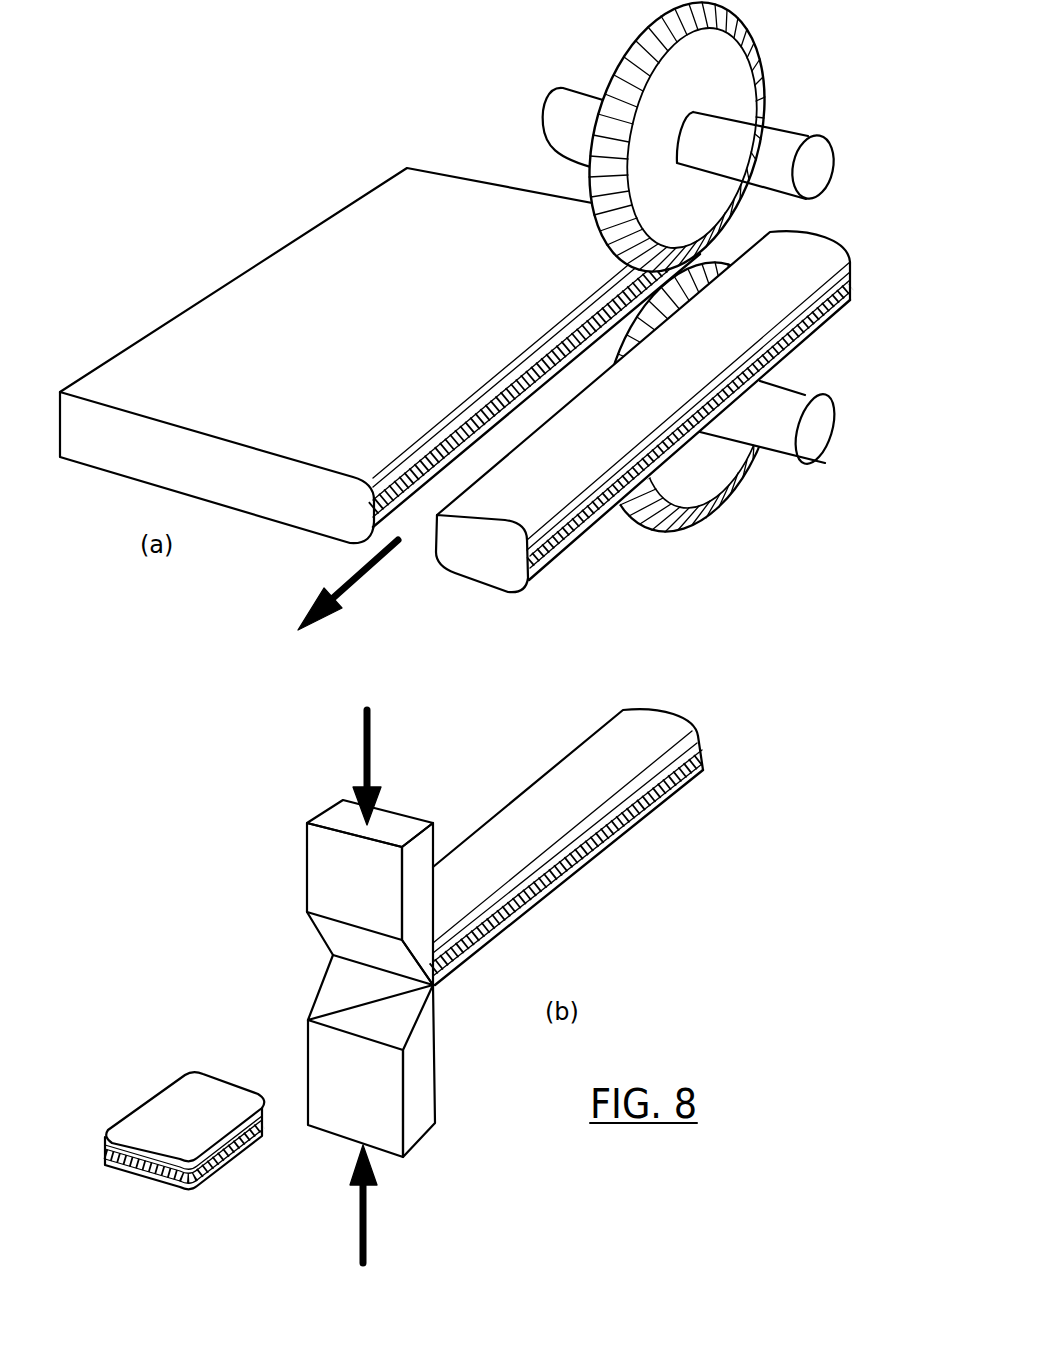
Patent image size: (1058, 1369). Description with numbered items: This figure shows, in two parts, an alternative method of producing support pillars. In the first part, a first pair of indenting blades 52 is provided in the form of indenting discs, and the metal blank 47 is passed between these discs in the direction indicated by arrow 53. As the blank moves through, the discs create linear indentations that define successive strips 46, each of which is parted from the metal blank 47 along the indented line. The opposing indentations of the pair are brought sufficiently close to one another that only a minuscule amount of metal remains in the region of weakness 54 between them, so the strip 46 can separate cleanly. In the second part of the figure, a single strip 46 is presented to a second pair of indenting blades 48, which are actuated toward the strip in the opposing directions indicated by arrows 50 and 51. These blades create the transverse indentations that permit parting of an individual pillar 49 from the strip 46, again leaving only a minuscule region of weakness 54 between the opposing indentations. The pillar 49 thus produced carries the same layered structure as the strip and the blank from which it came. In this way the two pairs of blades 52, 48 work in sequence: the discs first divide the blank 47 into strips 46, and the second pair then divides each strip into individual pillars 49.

The strip 46 is at (820, 228).
The metal blank 47 is at (388, 252).
The second pair of indenting blades 48 is at (303, 1000).
The pillar 49 is at (158, 1112).
The arrow 50 is at (384, 767).
The arrow 51 is at (378, 1204).
The first pair of indenting blades 52 is at (770, 75).
The arrow 53 is at (348, 585).
The region of weakness 54 is at (587, 527).